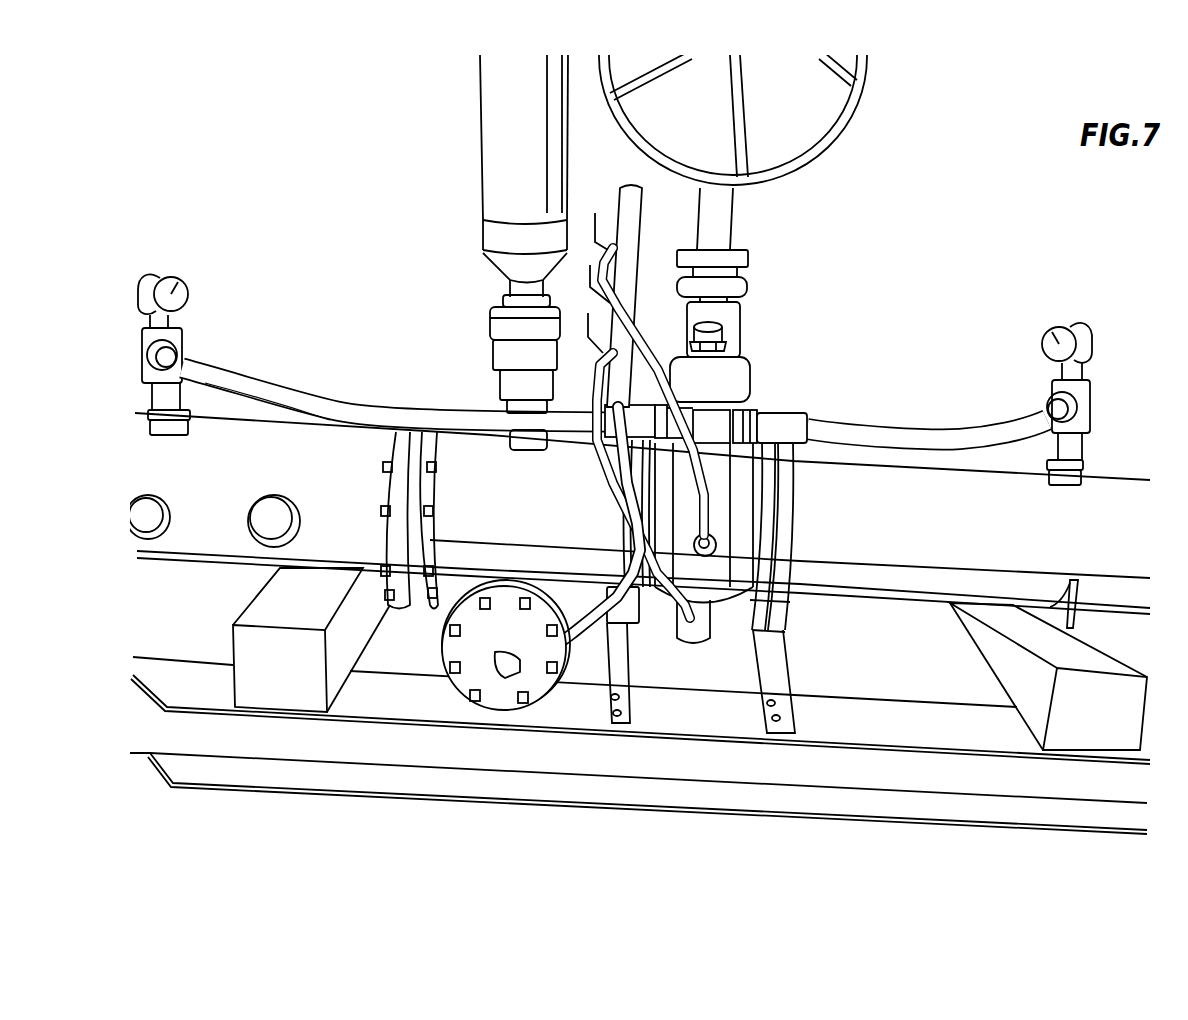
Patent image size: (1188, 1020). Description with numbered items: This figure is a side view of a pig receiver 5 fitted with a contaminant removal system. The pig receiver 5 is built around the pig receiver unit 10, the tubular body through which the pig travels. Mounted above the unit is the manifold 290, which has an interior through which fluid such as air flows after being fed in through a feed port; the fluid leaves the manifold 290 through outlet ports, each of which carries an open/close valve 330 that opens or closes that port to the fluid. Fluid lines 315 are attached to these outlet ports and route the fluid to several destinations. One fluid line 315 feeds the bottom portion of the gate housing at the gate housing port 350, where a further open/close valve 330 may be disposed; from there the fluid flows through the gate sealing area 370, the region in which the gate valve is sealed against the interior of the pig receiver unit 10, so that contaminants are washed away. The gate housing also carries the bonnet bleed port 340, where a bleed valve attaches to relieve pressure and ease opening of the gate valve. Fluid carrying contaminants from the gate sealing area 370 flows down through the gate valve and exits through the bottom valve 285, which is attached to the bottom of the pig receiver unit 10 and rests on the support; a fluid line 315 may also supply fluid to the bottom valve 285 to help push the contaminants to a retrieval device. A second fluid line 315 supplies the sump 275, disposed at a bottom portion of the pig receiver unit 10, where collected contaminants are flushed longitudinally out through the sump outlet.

The pig receiver 5 is at (1057, 867).
The pig receiver unit 10 is at (1023, 534).
The sump 275 is at (465, 672).
The bottom valve 285 is at (702, 630).
The manifold 290 is at (632, 186).
The fluid lines 315 is at (612, 280).
The open/close valve 330 is at (588, 288).
The bonnet bleed port 340 is at (712, 326).
The gate housing port 350 is at (727, 540).
The gate sealing area 370 is at (710, 597).